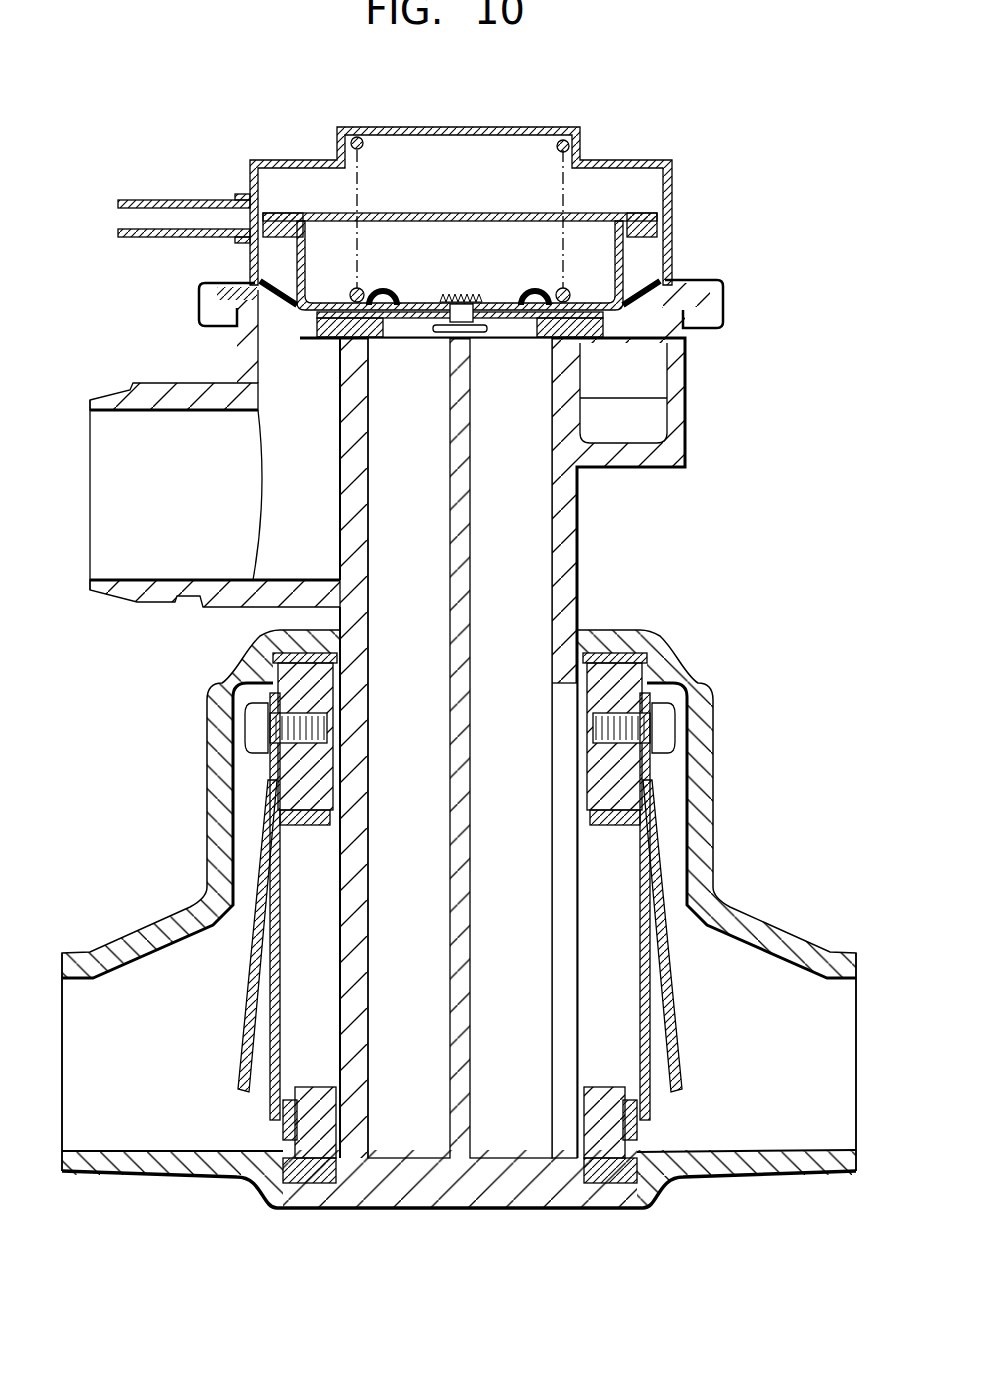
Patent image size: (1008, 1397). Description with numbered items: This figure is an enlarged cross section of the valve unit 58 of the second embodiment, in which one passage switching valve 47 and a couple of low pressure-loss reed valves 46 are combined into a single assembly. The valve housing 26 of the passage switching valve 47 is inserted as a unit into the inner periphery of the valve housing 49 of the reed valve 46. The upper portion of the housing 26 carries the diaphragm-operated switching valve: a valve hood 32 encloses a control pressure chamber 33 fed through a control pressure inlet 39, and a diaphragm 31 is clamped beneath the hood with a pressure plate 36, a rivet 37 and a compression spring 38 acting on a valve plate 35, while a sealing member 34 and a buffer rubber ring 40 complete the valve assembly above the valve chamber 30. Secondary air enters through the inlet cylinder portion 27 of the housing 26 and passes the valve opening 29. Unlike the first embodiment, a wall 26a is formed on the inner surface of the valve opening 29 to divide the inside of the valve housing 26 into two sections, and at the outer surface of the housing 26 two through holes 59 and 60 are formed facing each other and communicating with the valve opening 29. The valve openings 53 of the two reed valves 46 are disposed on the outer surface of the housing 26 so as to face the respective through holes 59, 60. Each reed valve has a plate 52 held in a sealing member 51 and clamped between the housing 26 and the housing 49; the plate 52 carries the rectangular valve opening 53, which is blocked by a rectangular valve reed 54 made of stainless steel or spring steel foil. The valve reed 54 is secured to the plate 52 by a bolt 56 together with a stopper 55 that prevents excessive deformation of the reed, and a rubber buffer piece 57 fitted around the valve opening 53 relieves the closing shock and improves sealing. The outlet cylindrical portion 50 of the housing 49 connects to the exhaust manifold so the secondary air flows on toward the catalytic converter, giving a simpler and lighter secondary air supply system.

The valve housing 26 is at (675, 385).
The wall 26a is at (463, 977).
The inlet cylinder portion 27 is at (127, 390).
The valve opening 29 is at (378, 360).
The valve chamber 30 is at (260, 352).
The diaphragm 31 is at (650, 267).
The valve hood 32 is at (673, 163).
The control pressure chamber 33 is at (280, 187).
The sealing member 34 is at (547, 327).
The valve plate 35 is at (670, 328).
The pressure plate 36 is at (300, 273).
The rivet 37 is at (457, 293).
The compression spring 38 is at (587, 140).
The control pressure inlet 39 is at (140, 197).
The buffer rubber ring 40 is at (647, 207).
The low pressure-loss reed valve 46 is at (192, 832).
The passage switching valve 47 is at (499, 248).
The valve housing 49 is at (253, 717).
The outlet cylindrical portion 50 is at (117, 1163).
The sealing member 51 is at (300, 1183).
The plate 52 is at (352, 1130).
The valve opening 53 is at (318, 882).
The valve reed 54 is at (320, 945).
The stopper 55 is at (240, 1063).
The bolt 56 is at (250, 690).
The rubber buffer piece 57 is at (297, 1130).
The valve unit 58 is at (680, 515).
The through hole 59 is at (370, 800).
The through hole 60 is at (563, 773).